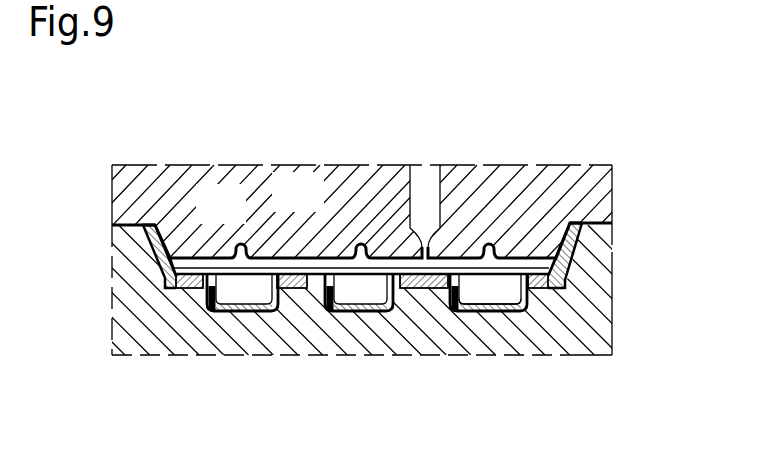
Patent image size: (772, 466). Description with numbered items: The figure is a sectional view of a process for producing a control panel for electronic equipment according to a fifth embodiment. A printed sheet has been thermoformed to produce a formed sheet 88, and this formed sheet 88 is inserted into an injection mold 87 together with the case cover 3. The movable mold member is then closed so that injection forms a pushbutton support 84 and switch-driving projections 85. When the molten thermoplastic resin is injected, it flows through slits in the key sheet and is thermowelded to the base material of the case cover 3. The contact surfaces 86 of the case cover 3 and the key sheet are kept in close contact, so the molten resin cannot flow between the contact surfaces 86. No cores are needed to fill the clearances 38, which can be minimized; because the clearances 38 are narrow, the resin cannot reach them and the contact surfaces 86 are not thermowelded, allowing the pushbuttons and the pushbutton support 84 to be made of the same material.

The case cover 3 is at (572, 249).
The clearances 38 is at (220, 296).
The pushbutton support 84 is at (293, 246).
The switch-driving projections 85 is at (236, 245).
The contact surfaces 86 is at (187, 288).
The injection mold 87 is at (599, 158).
The formed sheet 88 is at (502, 309).